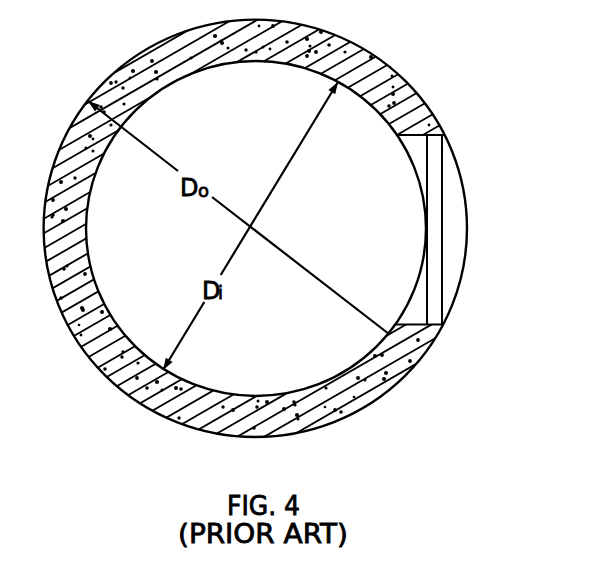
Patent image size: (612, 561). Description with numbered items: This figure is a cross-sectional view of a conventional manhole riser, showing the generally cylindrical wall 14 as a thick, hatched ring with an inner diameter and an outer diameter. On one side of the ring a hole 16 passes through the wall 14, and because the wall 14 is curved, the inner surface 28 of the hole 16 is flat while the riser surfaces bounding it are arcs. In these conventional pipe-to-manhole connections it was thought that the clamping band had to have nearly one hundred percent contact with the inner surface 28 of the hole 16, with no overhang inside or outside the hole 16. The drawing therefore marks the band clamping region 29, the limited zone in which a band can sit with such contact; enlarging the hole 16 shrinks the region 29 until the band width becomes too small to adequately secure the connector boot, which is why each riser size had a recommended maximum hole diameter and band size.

The generally cylindrical wall 14 is at (400, 72).
The hole 16 is at (405, 193).
The inner surface 28 is at (452, 227).
The band clamping region 29 is at (436, 163).